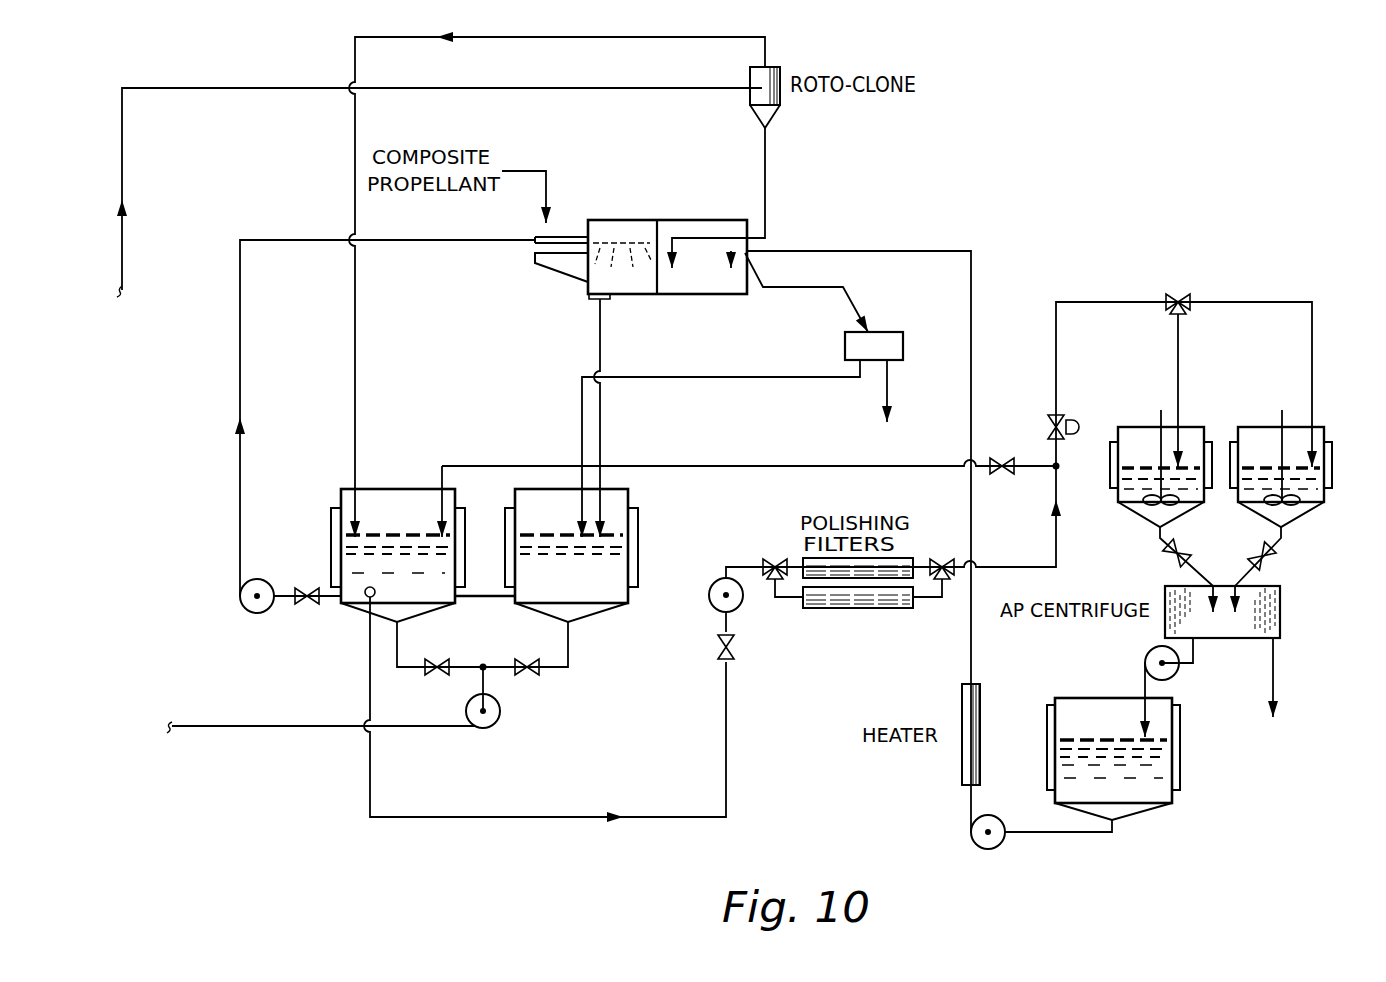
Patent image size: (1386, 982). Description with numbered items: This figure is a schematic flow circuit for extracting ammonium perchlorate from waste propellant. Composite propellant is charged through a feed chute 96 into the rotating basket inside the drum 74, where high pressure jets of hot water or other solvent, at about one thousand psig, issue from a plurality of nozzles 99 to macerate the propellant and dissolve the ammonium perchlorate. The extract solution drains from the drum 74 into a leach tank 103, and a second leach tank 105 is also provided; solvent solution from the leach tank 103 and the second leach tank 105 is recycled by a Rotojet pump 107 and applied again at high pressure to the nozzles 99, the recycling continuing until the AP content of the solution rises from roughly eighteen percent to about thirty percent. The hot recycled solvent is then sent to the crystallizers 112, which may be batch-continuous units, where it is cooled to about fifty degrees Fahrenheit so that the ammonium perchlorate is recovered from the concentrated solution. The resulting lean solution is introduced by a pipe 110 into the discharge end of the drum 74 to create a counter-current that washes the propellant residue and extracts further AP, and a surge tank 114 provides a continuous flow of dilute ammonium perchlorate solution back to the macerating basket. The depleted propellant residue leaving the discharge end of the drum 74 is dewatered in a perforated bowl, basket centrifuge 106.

The drum 74 is at (624, 219).
The feed chute 96 is at (575, 267).
The nozzles 99 is at (622, 264).
The leach tank 103 is at (628, 497).
The second leach tank 105 is at (390, 488).
The centrifuge 106 is at (882, 338).
The Rotojet pump 107 is at (262, 613).
The pipe 110 is at (733, 251).
The crystallizers 112 is at (1140, 503).
The surge tank 114 is at (1075, 715).